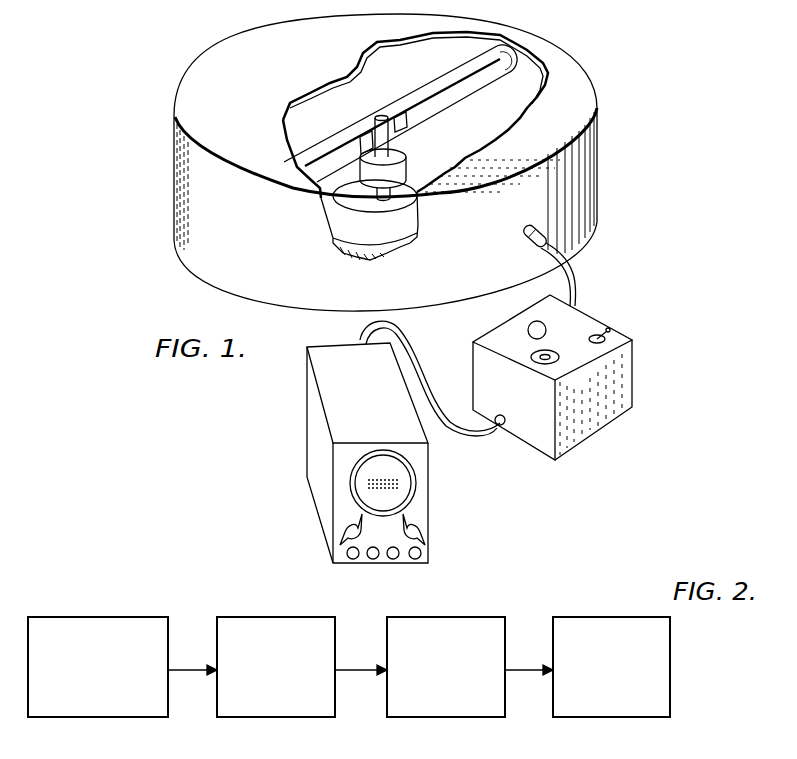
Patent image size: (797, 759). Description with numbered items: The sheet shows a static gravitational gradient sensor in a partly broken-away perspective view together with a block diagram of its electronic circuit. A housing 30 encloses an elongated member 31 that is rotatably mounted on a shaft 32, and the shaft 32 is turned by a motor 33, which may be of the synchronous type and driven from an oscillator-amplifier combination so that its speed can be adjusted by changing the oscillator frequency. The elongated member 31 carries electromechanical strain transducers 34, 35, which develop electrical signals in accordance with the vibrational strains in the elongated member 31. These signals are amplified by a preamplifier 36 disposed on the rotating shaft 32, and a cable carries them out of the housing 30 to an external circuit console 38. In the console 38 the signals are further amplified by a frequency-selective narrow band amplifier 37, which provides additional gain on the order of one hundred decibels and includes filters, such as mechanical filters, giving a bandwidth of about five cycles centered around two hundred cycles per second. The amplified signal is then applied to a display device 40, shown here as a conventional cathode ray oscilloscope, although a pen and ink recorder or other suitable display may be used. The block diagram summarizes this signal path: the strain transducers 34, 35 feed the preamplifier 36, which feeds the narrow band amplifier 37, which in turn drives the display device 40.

In FIG. 1, the housing 30 is at (258, 48).
In FIG. 1, the elongated member 31 is at (473, 74).
In FIG. 1, the shaft 32 is at (378, 116).
In FIG. 1, the motor 33 is at (407, 187).
In FIG. 1, the electromechanical strain transducer 34 is at (398, 115).
In FIG. 1, the electromechanical strain transducer 35 is at (368, 133).
In FIG. 2, the electromechanical strain transducer 35 is at (163, 601).
In FIG. 1, the preamplifier 36 is at (407, 156).
In FIG. 2, the preamplifier 36 is at (290, 630).
In FIG. 2, the narrow band amplifier 37 is at (487, 630).
In FIG. 1, the external circuit console 38 is at (557, 315).
In FIG. 1, the display device 40 is at (418, 503).
In FIG. 2, the display device 40 is at (595, 630).